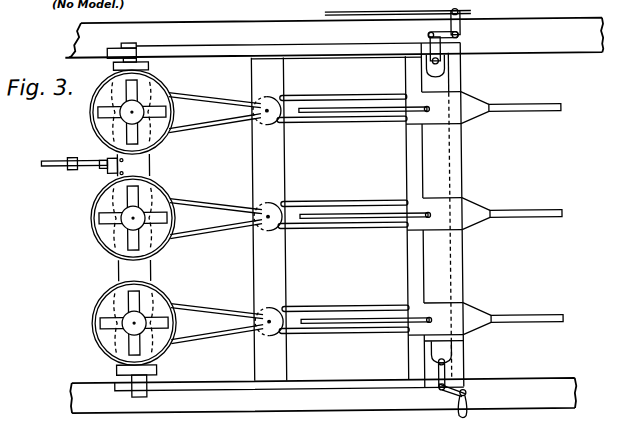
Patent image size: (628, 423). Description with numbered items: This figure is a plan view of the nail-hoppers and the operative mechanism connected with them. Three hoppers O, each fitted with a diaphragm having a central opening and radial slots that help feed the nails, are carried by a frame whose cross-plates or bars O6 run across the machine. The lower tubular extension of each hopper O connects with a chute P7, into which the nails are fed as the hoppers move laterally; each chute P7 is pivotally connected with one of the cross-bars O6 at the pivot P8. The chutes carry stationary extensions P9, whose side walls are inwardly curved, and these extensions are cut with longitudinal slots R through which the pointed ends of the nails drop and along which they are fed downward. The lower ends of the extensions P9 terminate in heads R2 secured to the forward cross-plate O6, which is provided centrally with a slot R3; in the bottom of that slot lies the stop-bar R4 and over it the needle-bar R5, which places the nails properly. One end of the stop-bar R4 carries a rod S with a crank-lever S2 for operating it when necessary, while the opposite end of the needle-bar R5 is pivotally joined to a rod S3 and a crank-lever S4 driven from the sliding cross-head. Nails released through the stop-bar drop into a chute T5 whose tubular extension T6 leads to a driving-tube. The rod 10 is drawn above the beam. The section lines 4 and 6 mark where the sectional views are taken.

The actuating rod 10 is at (398, 7).
The rod S3 is at (431, 43).
The crank-lever S4 is at (462, 33).
The needle-bar R5 is at (477, 153).
The heads R2 is at (447, 96).
The slot R3 is at (453, 248).
The stop-bar R4 is at (447, 362).
The longitudinal slots R is at (373, 116).
The stationary extensions P9 is at (333, 96).
The pivotal connection P8 is at (270, 216).
The chutes P7 is at (213, 96).
The nail-hoppers O is at (161, 93).
The cross-plates or bars O6 is at (410, 262).
The chute T5 is at (476, 208).
The tubular extension T6 is at (516, 212).
The rod S is at (437, 380).
The crank-lever S2 is at (464, 393).
The section line 6 6 is at (42, 161).
The section line 4 4 is at (95, 322).